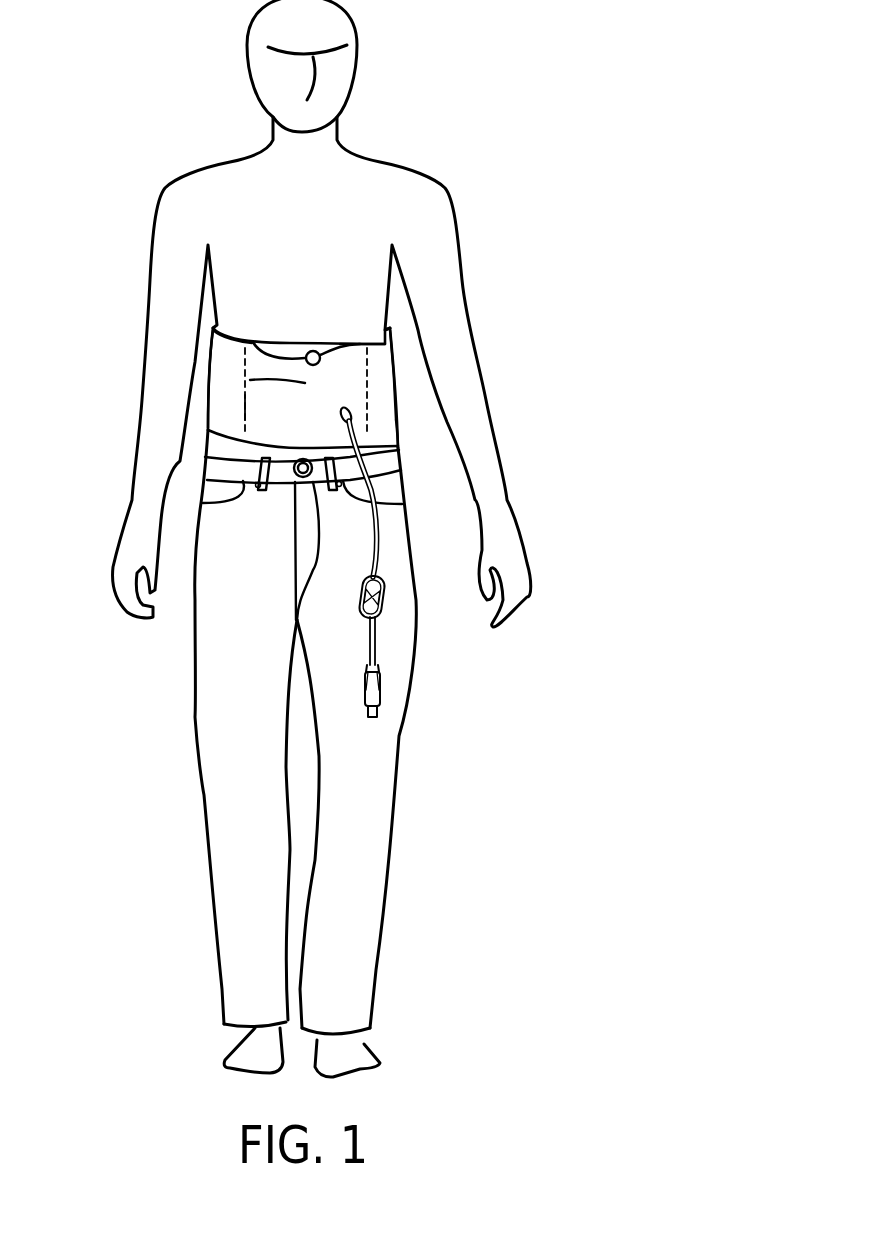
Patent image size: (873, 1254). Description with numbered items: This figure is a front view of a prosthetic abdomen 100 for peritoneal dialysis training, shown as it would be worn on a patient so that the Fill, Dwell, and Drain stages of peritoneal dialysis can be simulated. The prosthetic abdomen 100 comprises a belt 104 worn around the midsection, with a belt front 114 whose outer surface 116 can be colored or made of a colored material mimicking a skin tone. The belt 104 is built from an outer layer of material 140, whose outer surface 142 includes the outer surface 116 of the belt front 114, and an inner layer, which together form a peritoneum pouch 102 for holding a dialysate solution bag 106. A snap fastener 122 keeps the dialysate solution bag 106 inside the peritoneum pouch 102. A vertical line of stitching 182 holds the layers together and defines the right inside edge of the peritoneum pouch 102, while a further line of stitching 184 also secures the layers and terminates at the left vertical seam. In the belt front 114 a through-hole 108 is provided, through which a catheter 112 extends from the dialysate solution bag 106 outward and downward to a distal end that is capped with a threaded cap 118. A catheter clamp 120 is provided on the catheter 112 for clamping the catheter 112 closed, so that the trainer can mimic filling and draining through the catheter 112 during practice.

The prosthetic abdomen 100 is at (196, 375).
The peritoneum pouch 102 is at (290, 348).
The belt 104 is at (387, 351).
The dialysate solution bag 106 is at (353, 345).
The through-hole 108 is at (352, 415).
The catheter 112 is at (375, 635).
The belt front 114 is at (307, 383).
The outer surface 116 is at (238, 403).
The threaded cap 118 is at (380, 698).
The catheter clamp 120 is at (386, 598).
The snap fastener 122 is at (250, 342).
The outer layer of material 140 is at (402, 401).
The outer surface 142 is at (237, 403).
The vertical line of stitching 182 is at (367, 383).
The line of stitching 184 is at (205, 356).